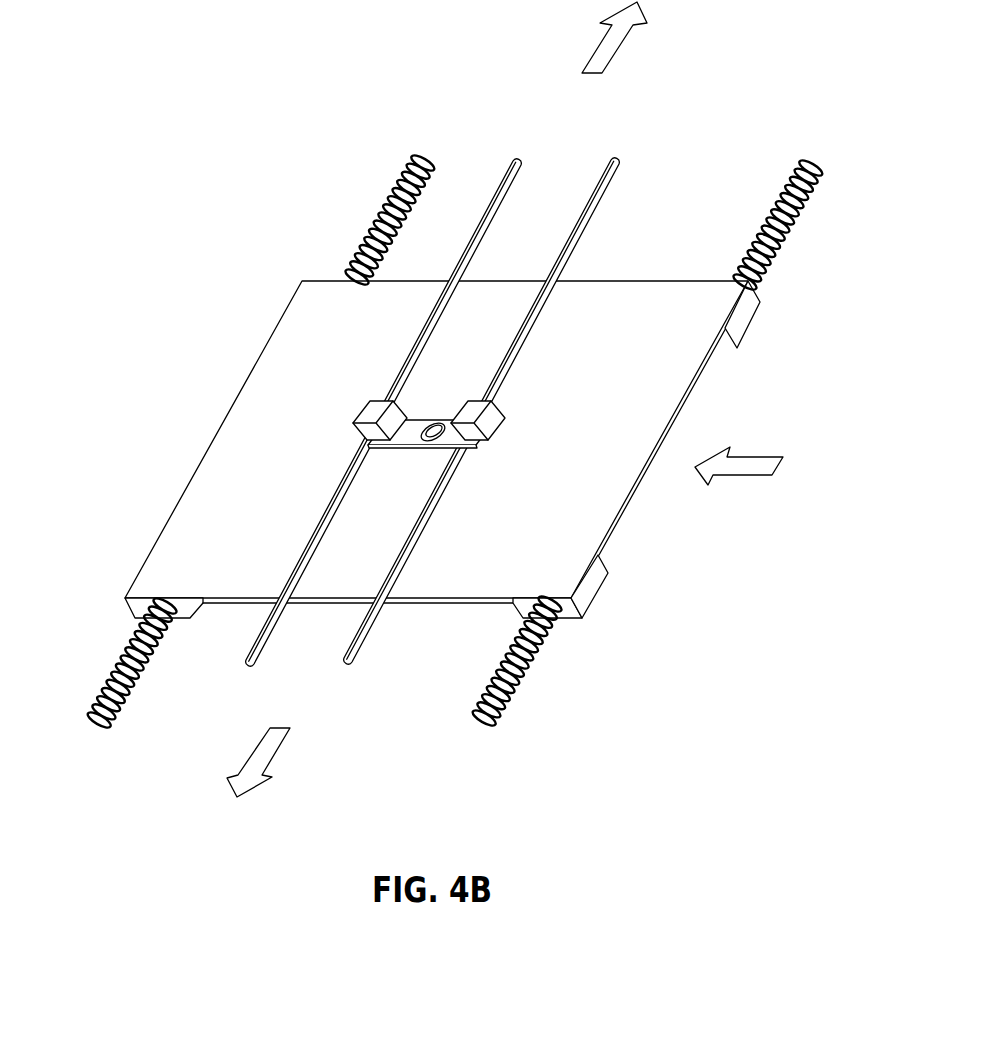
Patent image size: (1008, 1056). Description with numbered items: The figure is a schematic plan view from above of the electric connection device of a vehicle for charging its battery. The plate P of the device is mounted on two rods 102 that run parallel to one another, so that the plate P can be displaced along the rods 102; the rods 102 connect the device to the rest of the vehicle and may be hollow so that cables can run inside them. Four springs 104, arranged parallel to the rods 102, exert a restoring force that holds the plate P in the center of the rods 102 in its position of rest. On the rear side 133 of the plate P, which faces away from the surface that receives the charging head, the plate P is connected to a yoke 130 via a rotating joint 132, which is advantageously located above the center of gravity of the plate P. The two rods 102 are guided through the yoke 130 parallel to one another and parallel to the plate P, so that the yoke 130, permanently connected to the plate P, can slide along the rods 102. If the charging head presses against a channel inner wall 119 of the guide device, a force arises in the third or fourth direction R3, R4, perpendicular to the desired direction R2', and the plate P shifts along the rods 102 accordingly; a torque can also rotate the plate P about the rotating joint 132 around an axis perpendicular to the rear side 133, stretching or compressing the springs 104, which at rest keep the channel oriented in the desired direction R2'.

The rods 102 is at (618, 160).
The springs 104 is at (403, 174).
The channel inner wall 119 is at (720, 350).
The yoke 130 is at (372, 403).
The rotating joint 132 is at (425, 445).
The rear side 133 is at (273, 385).
The plate P is at (456, 496).
The desired direction R2' is at (739, 505).
The third direction R3 is at (275, 758).
The fourth direction R4 is at (603, 35).